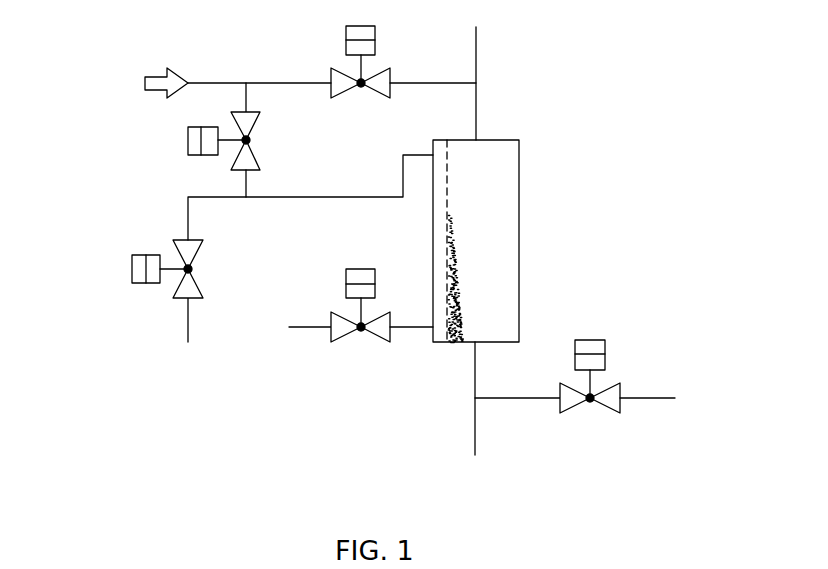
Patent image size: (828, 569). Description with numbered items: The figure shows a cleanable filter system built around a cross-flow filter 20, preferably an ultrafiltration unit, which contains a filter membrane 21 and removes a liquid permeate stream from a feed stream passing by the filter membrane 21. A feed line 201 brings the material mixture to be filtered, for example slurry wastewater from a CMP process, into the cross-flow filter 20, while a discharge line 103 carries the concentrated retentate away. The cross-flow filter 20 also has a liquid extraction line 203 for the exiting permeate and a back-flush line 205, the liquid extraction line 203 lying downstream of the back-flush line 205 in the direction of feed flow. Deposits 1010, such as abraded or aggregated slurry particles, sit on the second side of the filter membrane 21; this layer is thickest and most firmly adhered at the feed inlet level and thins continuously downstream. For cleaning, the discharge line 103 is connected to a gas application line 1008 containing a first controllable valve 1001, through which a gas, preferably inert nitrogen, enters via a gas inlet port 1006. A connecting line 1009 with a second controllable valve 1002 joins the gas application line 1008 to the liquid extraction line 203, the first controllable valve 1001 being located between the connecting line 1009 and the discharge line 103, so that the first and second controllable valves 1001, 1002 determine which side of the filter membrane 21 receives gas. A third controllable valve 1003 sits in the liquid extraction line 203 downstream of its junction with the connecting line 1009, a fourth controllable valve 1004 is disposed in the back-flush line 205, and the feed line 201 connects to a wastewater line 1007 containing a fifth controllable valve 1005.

The cross-flow filter 20 is at (521, 153).
The filter membrane 21 is at (447, 222).
The discharge line 103 is at (476, 68).
The feed line 201 is at (474, 438).
The liquid extraction line 203 is at (287, 198).
The back-flush line 205 is at (416, 327).
The first controllable valve 1001 is at (331, 72).
The second controllable valve 1002 is at (262, 164).
The third controllable valve 1003 is at (175, 297).
The fourth controllable valve 1004 is at (334, 342).
The fifth controllable valve 1005 is at (619, 385).
The gas inlet port 1006 is at (144, 83).
The wastewater line 1007 is at (645, 402).
The gas application line 1008 is at (437, 82).
The connecting line 1009 is at (245, 183).
The deposits 1010 is at (451, 342).